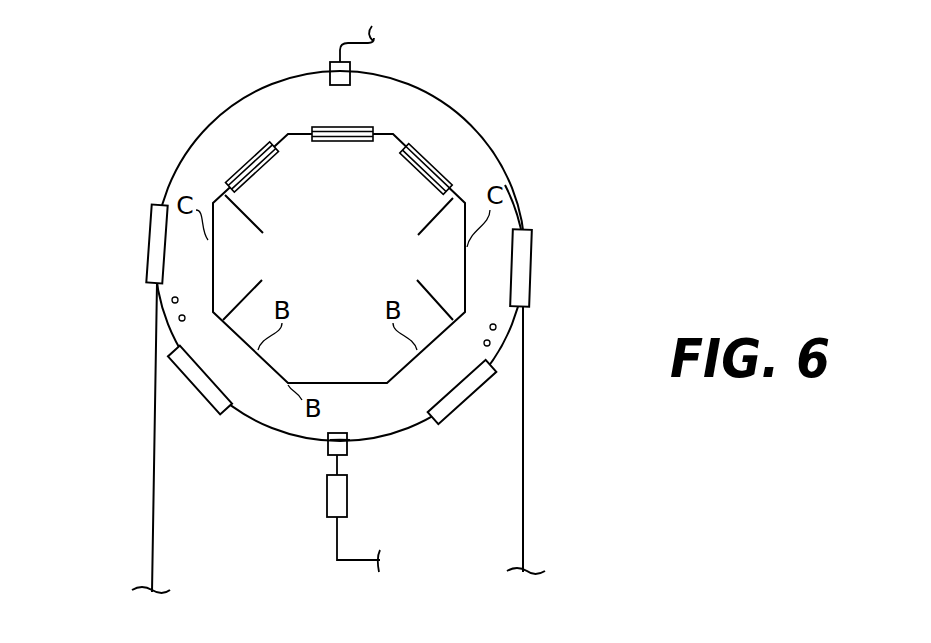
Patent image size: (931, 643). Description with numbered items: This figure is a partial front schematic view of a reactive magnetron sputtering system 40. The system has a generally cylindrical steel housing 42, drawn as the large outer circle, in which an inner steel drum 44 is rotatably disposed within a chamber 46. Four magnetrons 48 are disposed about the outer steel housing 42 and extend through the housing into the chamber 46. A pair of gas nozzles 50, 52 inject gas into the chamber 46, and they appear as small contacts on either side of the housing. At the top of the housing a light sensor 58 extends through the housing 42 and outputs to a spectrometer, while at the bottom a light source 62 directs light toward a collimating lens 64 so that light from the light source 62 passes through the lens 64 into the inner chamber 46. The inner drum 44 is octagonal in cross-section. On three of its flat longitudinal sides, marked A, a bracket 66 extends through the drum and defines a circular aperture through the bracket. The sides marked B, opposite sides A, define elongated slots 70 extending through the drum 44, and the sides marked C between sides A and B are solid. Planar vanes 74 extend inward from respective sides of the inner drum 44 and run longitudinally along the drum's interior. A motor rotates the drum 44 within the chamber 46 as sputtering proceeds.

The reactive magnetron sputtering system 40 is at (545, 112).
The cylindrical steel housing 42 is at (420, 90).
The inner steel drum 44 is at (517, 212).
The chamber 46 is at (398, 423).
The magnetron 48 is at (150, 230).
The gas nozzle 50 is at (170, 302).
The gas nozzle 52 is at (178, 320).
The light sensor 58 is at (330, 70).
The light source 62 is at (327, 500).
The collimating lens 64 is at (348, 447).
The bracket 66 is at (432, 162).
The elongated slot 70 is at (328, 370).
The planar vane 74 is at (238, 298).